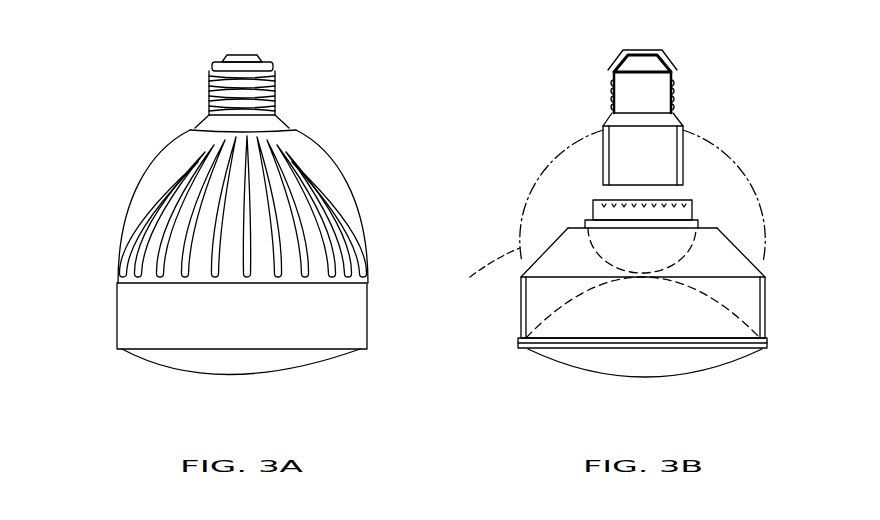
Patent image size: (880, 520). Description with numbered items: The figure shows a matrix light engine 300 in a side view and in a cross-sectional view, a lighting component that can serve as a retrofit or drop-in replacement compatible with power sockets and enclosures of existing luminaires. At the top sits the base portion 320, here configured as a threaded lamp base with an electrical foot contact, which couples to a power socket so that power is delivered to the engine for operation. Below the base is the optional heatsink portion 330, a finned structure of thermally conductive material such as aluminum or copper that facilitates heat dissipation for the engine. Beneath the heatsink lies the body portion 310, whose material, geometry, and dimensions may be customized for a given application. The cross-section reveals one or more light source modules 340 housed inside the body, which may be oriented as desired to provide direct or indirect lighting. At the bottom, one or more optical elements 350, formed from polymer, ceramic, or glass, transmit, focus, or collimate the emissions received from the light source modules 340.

In FIG. 3A, the matrix light engine 300 is at (414, 77).
In FIG. 3A, the body portion 310 is at (141, 314).
In FIG. 3B, the body portion 310 is at (509, 359).
In FIG. 3A, the base portion 320 is at (208, 81).
In FIG. 3B, the base portion 320 is at (717, 70).
In FIG. 3A, the heatsink portion 330 is at (183, 165).
In FIG. 3B, the light source module 340 is at (606, 197).
In FIG. 3A, the optical element 350 is at (256, 361).
In FIG. 3B, the optical element 350 is at (625, 250).